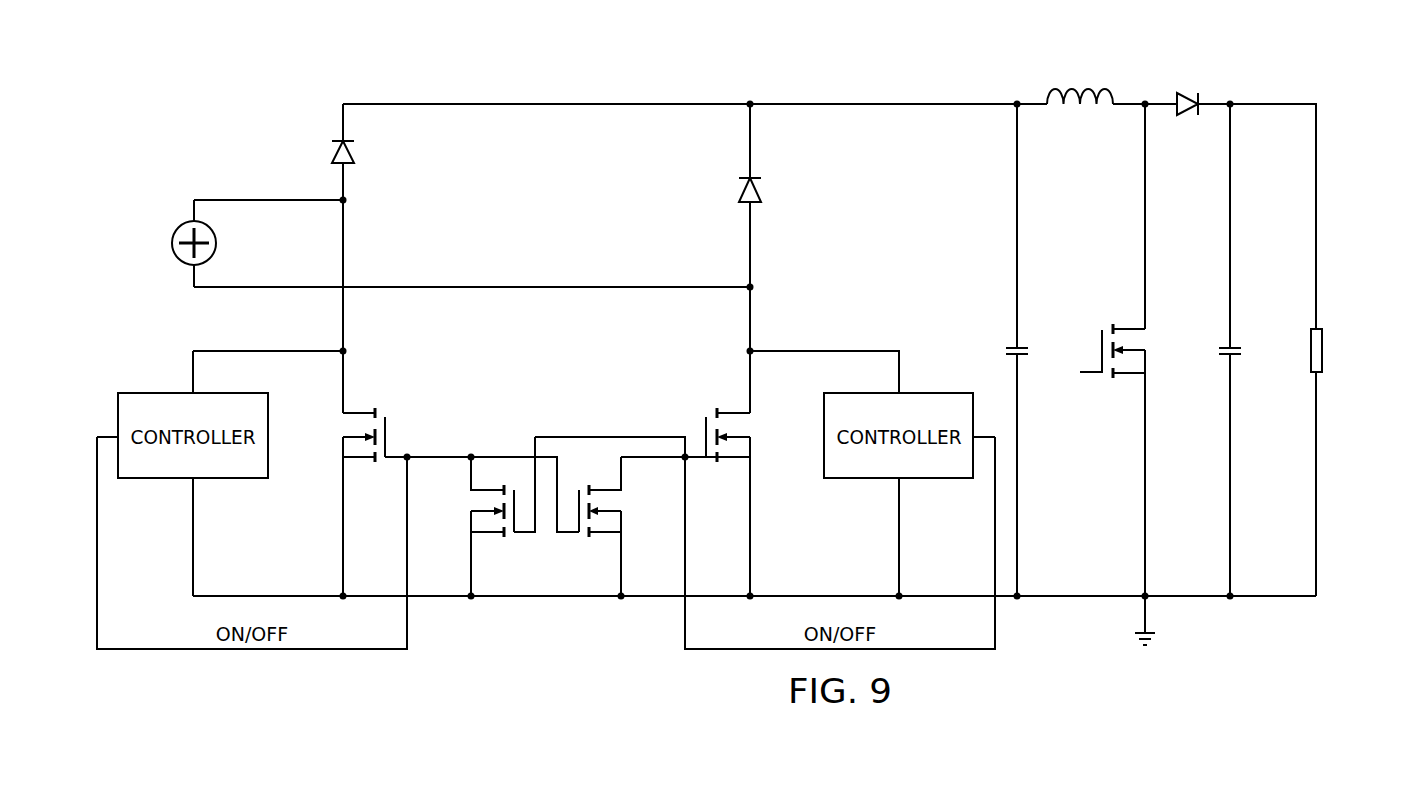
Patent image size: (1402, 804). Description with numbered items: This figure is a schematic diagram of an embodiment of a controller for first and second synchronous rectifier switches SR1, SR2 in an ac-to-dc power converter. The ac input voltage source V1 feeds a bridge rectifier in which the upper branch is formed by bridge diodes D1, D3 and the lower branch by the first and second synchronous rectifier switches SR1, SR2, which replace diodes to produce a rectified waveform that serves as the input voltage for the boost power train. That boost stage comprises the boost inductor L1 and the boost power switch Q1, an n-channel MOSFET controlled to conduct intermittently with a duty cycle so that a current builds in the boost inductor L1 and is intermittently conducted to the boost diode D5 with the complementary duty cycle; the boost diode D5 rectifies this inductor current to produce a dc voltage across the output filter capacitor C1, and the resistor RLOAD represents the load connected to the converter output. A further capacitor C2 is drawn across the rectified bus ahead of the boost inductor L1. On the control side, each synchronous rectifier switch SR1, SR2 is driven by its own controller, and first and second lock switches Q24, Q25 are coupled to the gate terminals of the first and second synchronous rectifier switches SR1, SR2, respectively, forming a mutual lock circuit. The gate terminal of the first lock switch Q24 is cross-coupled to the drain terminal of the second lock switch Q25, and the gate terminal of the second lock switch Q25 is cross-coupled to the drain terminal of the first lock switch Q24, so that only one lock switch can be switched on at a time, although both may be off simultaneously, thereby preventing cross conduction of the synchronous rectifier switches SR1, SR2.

The ac input voltage source V1 is at (179, 243).
The bridge diode D1 is at (359, 133).
The bridge diode D3 is at (765, 153).
The boost diode D5 is at (1187, 89).
The boost inductor L1 is at (1080, 84).
The output filter capacitor C1 is at (1246, 350).
The capacitor C2 is at (1033, 350).
The boost power switch Q1 is at (1129, 350).
The first lock switch Q24 is at (469, 526).
The second lock switch Q25 is at (622, 526).
The first synchronous rectifier switch SR1 is at (341, 435).
The second synchronous rectifier switch SR2 is at (741, 435).
The load resistor RLOAD is at (1347, 350).